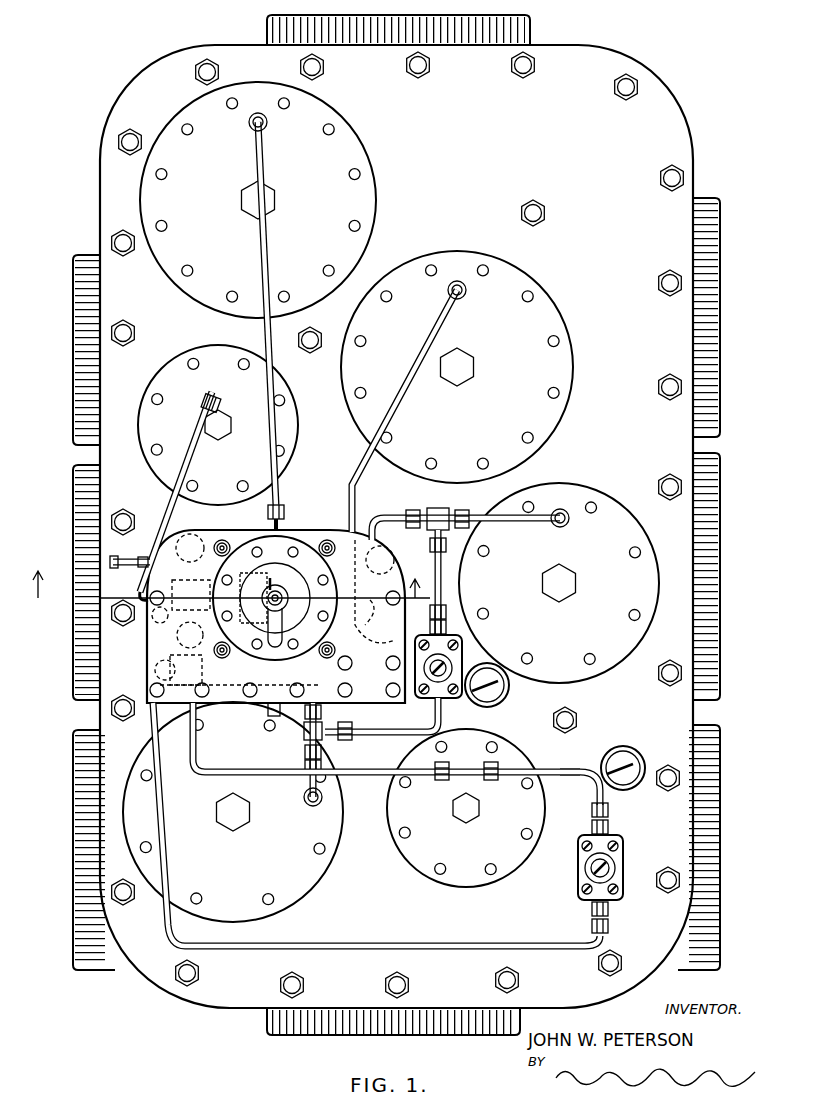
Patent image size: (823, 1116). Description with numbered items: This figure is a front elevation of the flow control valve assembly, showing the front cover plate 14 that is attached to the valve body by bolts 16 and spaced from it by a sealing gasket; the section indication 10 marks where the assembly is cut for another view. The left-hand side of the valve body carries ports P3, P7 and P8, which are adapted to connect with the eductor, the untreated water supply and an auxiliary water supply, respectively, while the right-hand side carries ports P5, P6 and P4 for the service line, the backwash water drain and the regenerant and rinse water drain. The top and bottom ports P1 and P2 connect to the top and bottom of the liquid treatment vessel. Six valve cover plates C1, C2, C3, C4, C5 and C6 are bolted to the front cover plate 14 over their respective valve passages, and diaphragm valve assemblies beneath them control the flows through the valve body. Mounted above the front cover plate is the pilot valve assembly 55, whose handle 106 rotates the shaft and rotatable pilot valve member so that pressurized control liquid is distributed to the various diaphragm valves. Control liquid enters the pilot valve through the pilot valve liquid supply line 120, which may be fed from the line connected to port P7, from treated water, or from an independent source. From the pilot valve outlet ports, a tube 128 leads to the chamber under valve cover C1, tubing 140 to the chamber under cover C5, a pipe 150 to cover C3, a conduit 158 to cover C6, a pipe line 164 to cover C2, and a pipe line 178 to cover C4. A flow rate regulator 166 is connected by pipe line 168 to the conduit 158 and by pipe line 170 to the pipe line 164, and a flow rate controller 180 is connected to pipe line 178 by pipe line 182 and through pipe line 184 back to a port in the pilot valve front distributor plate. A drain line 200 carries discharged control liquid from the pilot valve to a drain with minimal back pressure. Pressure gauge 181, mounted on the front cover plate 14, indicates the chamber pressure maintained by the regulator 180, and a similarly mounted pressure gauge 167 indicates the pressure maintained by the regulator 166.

The section line / apparatus 10 is at (225, 597).
The front cover plate 14 is at (489, 143).
The bolts 16 is at (662, 170).
The pilot valve assembly 55 is at (110, 660).
The handle 106 is at (322, 673).
The pilot valve liquid supply line 120 is at (125, 556).
The tube 128 is at (272, 248).
The pipe line or tubing 140 is at (398, 396).
The pipe or tube 150 is at (196, 450).
The conduit 158 is at (388, 518).
The pipe line 164 is at (304, 738).
The flow rate regulator 166 is at (458, 706).
The pressure gauge 167 is at (510, 699).
The pipe line 168 is at (436, 574).
The pipe line 170 is at (352, 738).
The pipe line 178 is at (254, 769).
The flow rate controller 180 is at (625, 862).
The pressure gauge 181 is at (640, 758).
The pipe line 182 is at (568, 768).
The pipe line 184 is at (446, 943).
The drain line 200 is at (266, 714).
The port P1 is at (532, 17).
The port P2 is at (322, 1036).
The port P3 is at (72, 330).
The port P4 is at (722, 813).
The port P5 is at (722, 300).
The port P6 is at (722, 570).
The port P7 is at (72, 524).
The port P8 is at (72, 804).
The valve cover plate C1 is at (202, 202).
The valve cover plate C2 is at (236, 876).
The valve cover plate C3 is at (228, 478).
The valve cover plate C4 is at (470, 868).
The valve cover plate C5 is at (511, 372).
The valve cover plate C6 is at (588, 641).